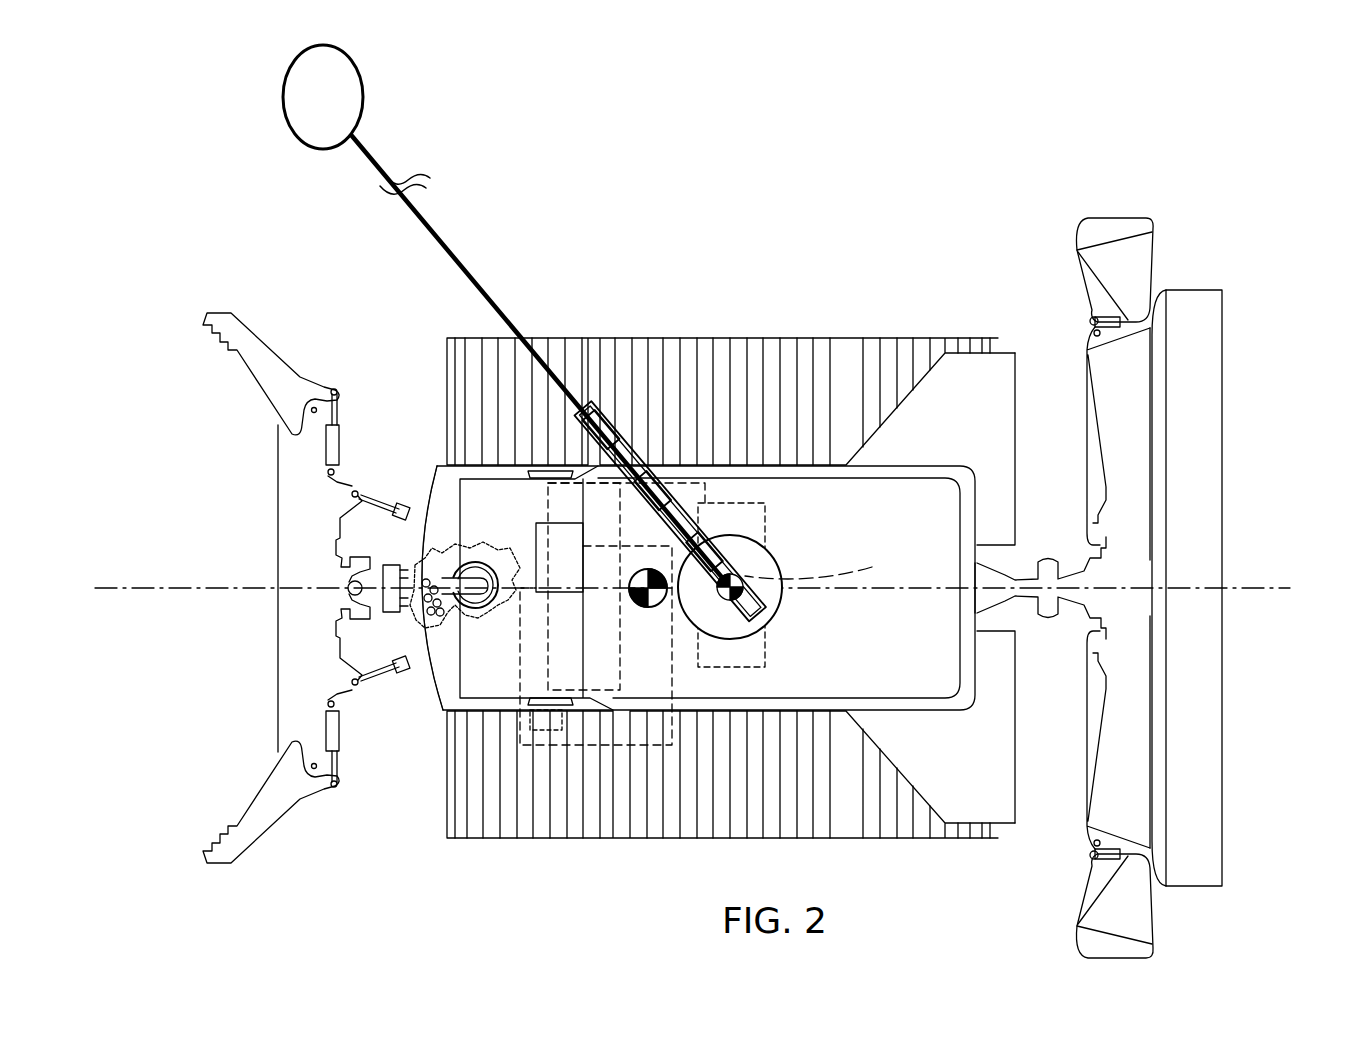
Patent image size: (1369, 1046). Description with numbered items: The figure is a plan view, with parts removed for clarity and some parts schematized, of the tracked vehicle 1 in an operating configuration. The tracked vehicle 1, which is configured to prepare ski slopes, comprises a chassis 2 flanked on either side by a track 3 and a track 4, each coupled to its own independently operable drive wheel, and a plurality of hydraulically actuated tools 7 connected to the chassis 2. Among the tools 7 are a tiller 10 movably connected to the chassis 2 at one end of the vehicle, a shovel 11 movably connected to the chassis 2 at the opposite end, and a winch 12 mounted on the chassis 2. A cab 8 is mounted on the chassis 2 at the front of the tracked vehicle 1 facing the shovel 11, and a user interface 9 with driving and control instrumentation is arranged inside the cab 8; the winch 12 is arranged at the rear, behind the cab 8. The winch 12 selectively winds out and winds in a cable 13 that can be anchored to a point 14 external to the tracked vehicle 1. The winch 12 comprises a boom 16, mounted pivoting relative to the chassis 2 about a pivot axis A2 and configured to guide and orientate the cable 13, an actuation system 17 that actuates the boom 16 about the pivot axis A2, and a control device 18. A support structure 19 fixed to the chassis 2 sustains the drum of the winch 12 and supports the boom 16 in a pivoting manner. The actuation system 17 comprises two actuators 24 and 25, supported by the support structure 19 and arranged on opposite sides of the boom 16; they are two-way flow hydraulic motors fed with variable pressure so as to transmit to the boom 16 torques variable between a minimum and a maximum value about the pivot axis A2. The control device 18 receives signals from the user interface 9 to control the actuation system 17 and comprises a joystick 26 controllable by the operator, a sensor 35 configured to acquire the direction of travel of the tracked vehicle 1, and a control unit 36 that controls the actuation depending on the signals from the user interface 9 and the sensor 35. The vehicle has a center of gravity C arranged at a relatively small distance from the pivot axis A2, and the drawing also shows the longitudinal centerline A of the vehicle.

The tracked vehicle 1 is at (256, 228).
The chassis 2 is at (882, 488).
The track 3 is at (722, 350).
The track 4 is at (495, 822).
The hydraulically actuated tools 7 is at (216, 562).
The cab 8 is at (426, 478).
The user interface 9 is at (358, 532).
The tiller 10 is at (1207, 373).
The shovel 11 is at (300, 640).
The winch 12 is at (807, 606).
The cable 13 is at (450, 240).
The point 14 is at (348, 87).
The boom 16 is at (620, 430).
The actuation system 17 is at (799, 560).
The control device 18 is at (533, 522).
The support structure 19 is at (767, 567).
The actuator 24 is at (745, 645).
The actuator 25 is at (723, 520).
The joystick 26 is at (452, 620).
The sensor 35 is at (518, 740).
The control unit 36 is at (565, 602).
The axis A is at (133, 598).
The pivot axis A2 is at (825, 558).
The center of gravity C is at (645, 600).